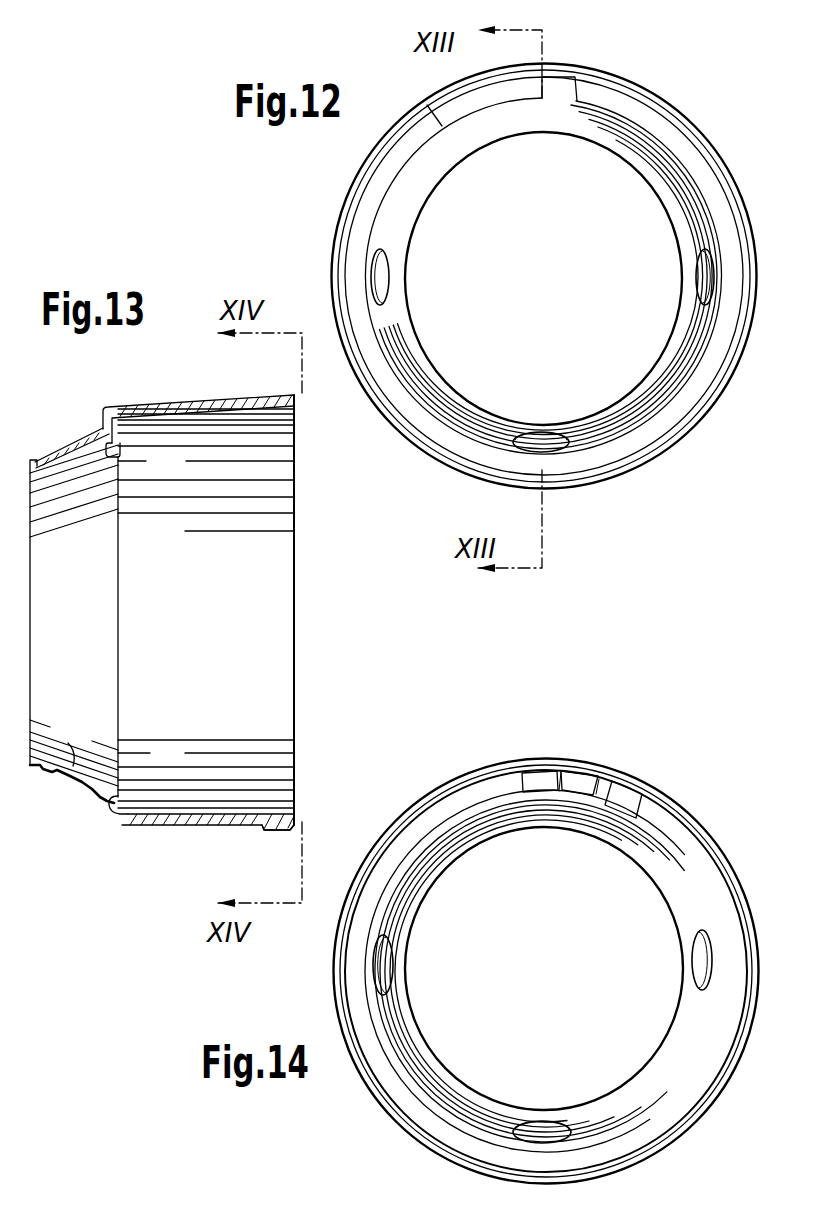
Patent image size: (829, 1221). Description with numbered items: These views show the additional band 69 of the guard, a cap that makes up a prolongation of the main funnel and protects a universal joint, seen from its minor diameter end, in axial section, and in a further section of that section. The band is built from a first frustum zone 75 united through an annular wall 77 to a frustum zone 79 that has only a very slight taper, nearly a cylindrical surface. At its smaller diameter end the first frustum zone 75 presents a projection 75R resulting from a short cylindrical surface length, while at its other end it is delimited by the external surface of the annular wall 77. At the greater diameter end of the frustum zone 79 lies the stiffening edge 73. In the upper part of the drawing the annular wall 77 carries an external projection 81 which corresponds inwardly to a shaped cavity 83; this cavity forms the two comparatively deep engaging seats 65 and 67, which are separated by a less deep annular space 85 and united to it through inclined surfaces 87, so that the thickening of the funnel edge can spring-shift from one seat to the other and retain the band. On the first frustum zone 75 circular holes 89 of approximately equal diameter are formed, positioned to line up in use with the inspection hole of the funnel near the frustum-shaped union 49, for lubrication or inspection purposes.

In FIG. 12, the frustum-shaped union 49 is at (602, 473).
In FIG. 13, the engaging seat 65 is at (137, 407).
In FIG. 14, the engaging seat 65 is at (542, 775).
In FIG. 13, the engaging seat 67 is at (120, 449).
In FIG. 14, the engaging seat 67 is at (625, 800).
In FIG. 13, the additional band 69 is at (176, 826).
In FIG. 12, the stiffening edge 73 is at (650, 463).
In FIG. 13, the stiffening edge 73 is at (294, 399).
In FIG. 14, the stiffening edge 73 is at (421, 1142).
In FIG. 12, the first frustum zone 75 is at (655, 407).
In FIG. 13, the first frustum zone 75 is at (104, 799).
In FIG. 14, the first frustum zone 75 is at (462, 1097).
In FIG. 13, the projection 75R is at (34, 457).
In FIG. 13, the annular wall 77 is at (121, 803).
In FIG. 13, the frustum zone 79 is at (237, 824).
In FIG. 12, the external projection 81 is at (555, 86).
In FIG. 14, the shaped cavity 83 is at (581, 808).
In FIG. 14, the annular space 85 is at (582, 785).
In FIG. 14, the inclined surfaces 87 is at (562, 797).
In FIG. 12, the circular holes 89 is at (389, 272).
In FIG. 13, the circular holes 89 is at (68, 739).
In FIG. 14, the circular holes 89 is at (397, 978).